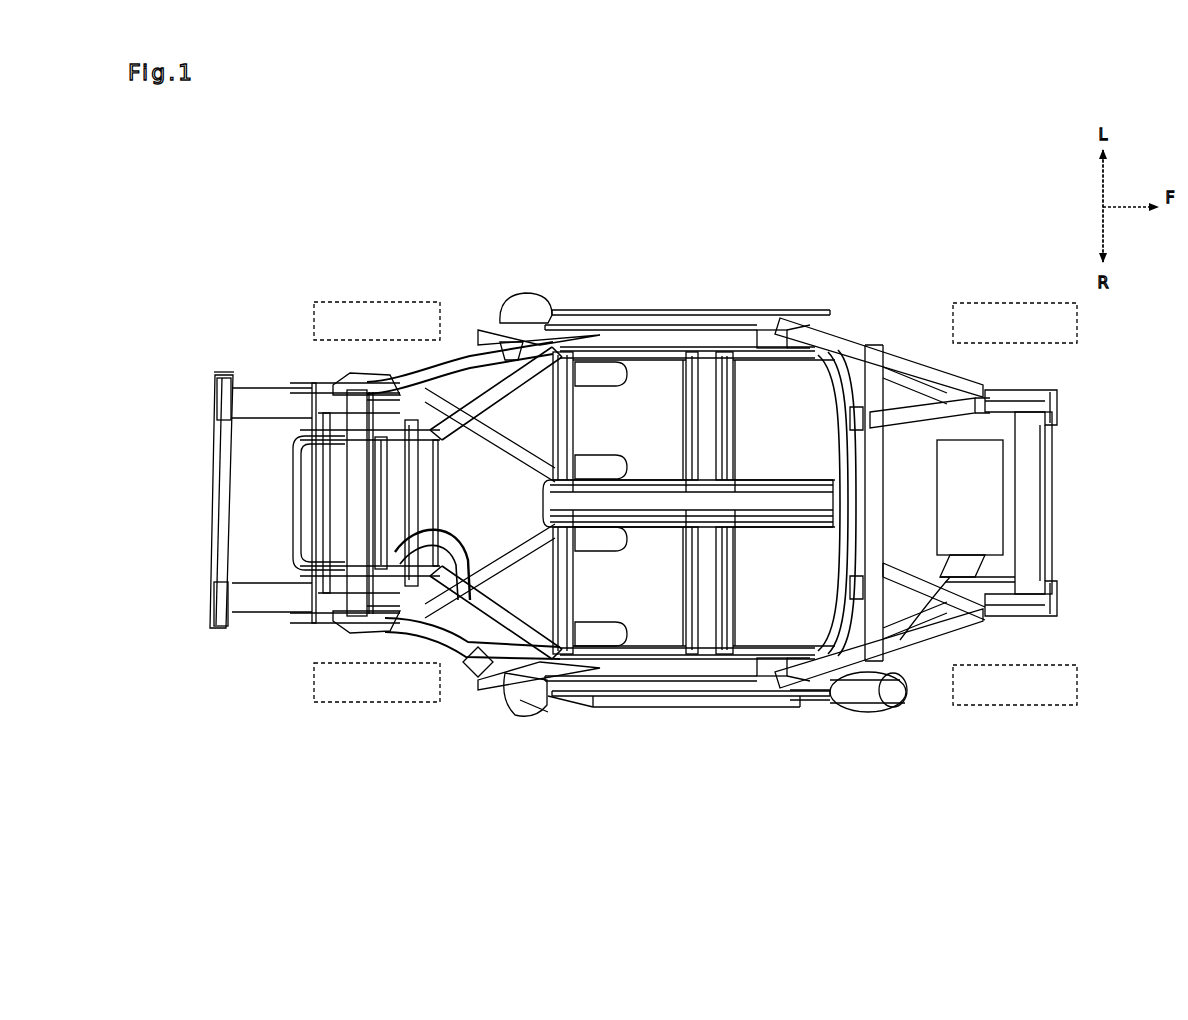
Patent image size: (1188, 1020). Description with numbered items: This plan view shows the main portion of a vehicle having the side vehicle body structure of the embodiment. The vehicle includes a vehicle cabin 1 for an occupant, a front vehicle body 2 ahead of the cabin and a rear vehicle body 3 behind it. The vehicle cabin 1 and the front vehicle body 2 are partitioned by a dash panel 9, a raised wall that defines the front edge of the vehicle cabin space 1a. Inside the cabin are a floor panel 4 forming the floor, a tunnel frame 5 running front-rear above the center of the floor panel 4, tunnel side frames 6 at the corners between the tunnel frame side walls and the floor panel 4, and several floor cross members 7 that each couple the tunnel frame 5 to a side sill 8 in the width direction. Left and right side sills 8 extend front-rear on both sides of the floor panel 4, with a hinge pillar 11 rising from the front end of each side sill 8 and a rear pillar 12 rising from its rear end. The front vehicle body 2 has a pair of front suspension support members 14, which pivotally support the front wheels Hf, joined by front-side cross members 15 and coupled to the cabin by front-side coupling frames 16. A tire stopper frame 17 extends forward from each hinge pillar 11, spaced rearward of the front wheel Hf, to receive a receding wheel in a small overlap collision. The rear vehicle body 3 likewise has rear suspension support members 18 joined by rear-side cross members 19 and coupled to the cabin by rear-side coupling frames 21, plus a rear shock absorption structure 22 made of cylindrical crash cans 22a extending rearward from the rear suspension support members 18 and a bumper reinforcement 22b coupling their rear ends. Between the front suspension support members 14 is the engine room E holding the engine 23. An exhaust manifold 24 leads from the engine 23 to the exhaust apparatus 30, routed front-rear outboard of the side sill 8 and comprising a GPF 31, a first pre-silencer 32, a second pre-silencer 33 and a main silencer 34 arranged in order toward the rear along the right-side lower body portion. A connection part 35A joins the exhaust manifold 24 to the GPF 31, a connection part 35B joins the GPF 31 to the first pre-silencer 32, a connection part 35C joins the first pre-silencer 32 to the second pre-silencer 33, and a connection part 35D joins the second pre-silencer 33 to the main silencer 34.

The vehicle cabin 1 is at (878, 312).
The vehicle cabin space 1a is at (658, 456).
The front vehicle body 2 is at (1085, 631).
The rear vehicle body 3 is at (240, 372).
The floor panel 4 is at (650, 360).
The tunnel frame 5 is at (778, 516).
The tunnel side frame 6 is at (770, 476).
The floor cross member 7 is at (578, 402).
The side sill 8 is at (583, 310).
The dash panel 9 is at (840, 589).
The hinge pillar 11 is at (845, 325).
The rear pillar 12 is at (502, 335).
The front suspension support member 14 is at (1040, 393).
The front-side cross member 15 is at (1050, 481).
The front-side coupling frame 16 is at (965, 389).
The tire stopper frame 17 is at (890, 327).
The rear suspension support member 18 is at (365, 379).
The rear-side cross member 19 is at (328, 453).
The rear-side coupling frame 21 is at (455, 378).
The rear shock absorption structure 22 is at (225, 501).
The crash can 22a is at (292, 388).
The bumper reinforcement 22b is at (212, 446).
The engine 23 is at (937, 463).
The exhaust manifold 24 is at (948, 558).
The exhaust apparatus 30 is at (898, 711).
The GPF 31 is at (870, 713).
The first pre-silencer 32 is at (715, 707).
The second pre-silencer 33 is at (540, 713).
The main silencer 34 is at (292, 511).
The connection part 35A is at (985, 576).
The connection part 35B is at (800, 701).
The connection part 35C is at (560, 698).
The connection part 35D is at (455, 558).
The front wheel Hf is at (985, 302).
The engine room E is at (896, 500).